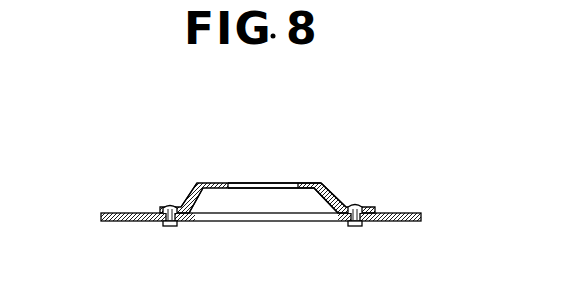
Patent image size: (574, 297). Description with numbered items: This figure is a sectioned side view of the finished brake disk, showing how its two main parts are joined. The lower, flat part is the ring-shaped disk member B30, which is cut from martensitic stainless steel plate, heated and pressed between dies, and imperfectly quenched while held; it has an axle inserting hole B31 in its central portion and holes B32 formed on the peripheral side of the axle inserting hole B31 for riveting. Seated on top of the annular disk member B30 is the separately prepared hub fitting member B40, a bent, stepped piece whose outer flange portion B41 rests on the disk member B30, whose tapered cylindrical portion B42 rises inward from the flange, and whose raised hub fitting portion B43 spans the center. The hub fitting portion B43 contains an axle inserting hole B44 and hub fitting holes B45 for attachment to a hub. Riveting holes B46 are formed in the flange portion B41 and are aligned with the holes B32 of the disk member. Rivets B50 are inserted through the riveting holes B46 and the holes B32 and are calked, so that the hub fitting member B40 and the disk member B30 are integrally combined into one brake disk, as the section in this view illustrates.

The disk member B30 is at (241, 213).
The axle inserting hole B31 is at (112, 212).
The holes B32 is at (172, 227).
The hub fitting member B40 is at (277, 161).
The flange portion B41 is at (157, 207).
The tapered cylindrical portion B42 is at (333, 201).
The hub fitting portion B43 is at (308, 183).
The axle inserting hole B44 is at (255, 183).
The hub fitting holes B45 is at (213, 183).
The riveting holes B46 is at (362, 204).
The rivets B50 is at (171, 205).